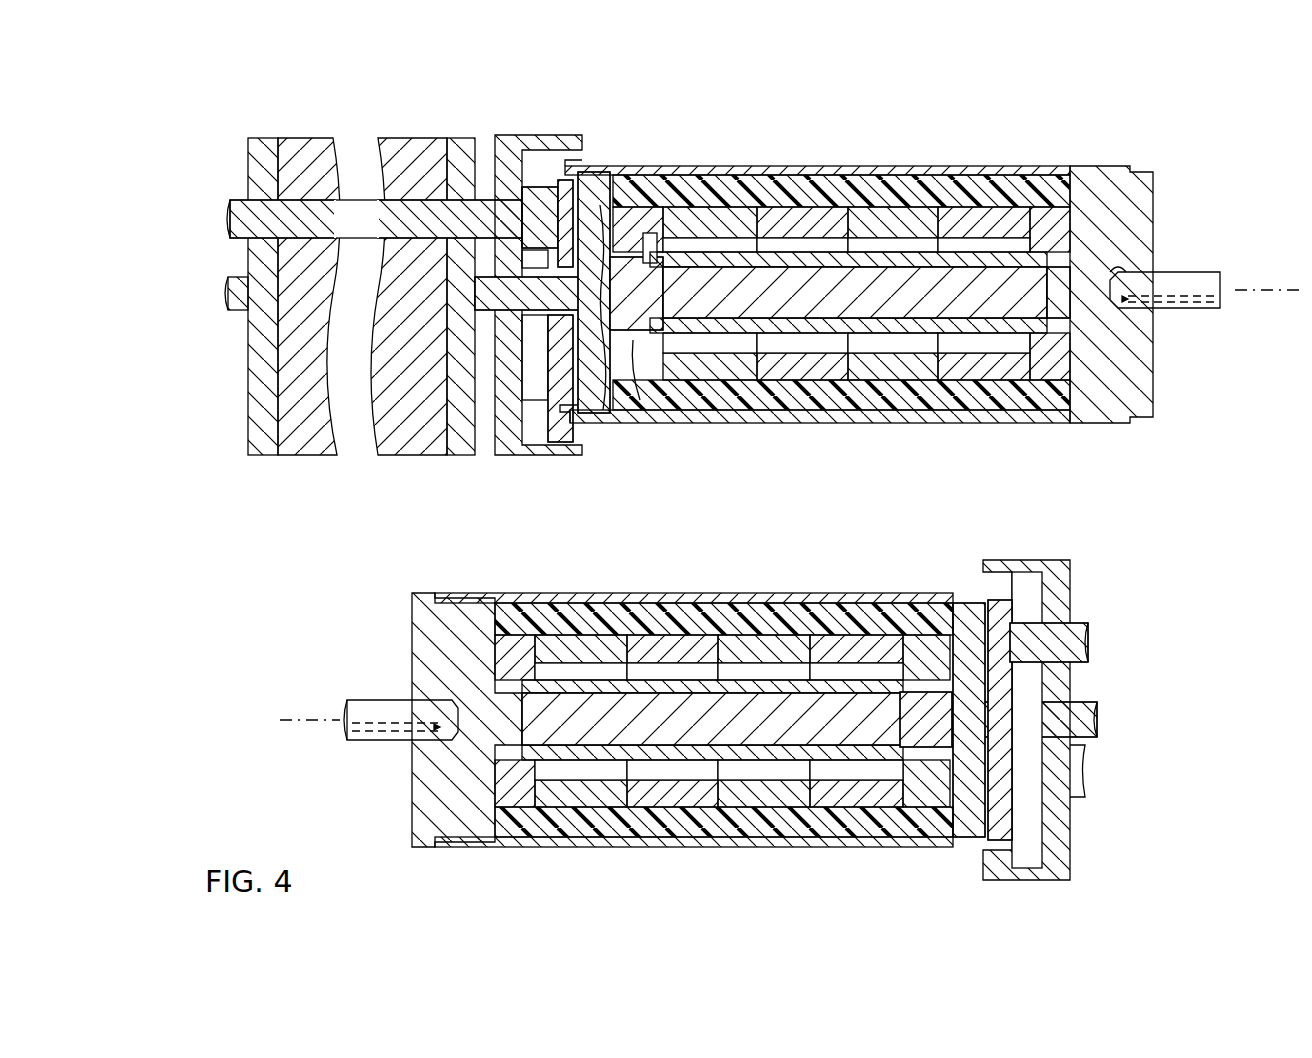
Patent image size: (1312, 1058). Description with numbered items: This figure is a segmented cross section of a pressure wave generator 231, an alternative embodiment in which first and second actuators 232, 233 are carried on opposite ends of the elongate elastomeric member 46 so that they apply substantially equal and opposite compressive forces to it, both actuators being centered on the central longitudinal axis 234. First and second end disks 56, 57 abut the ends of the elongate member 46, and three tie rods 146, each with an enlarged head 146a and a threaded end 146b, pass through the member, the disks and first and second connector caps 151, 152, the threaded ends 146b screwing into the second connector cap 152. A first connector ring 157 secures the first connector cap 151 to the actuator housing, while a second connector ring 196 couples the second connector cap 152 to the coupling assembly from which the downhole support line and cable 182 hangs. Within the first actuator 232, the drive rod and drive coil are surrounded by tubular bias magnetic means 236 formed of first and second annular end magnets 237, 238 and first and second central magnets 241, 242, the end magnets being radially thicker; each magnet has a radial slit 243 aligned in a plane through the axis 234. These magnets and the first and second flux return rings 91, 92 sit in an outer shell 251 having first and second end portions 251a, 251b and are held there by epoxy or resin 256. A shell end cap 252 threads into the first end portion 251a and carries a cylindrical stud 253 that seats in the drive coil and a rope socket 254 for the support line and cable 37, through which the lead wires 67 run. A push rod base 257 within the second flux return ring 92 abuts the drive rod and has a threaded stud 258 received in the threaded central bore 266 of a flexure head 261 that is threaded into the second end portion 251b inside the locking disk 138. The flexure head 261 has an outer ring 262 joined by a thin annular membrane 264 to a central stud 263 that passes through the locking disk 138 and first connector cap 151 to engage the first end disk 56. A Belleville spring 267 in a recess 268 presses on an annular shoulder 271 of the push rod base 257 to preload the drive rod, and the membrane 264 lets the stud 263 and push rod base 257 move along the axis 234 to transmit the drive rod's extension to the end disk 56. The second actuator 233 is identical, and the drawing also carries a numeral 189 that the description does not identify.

The support line and cable 37 is at (1195, 268).
The elongate member 46 is at (402, 132).
The first end disk 56 is at (462, 150).
The second end disk 57 is at (258, 150).
The wires 67 is at (1165, 305).
The first flux return ring 91 is at (1060, 215).
The second flux return ring 92 is at (690, 180).
The locking disk 138 is at (540, 400).
The tie rods 146 is at (378, 222).
The enlarged head 146a is at (540, 190).
The threaded end 146b is at (1090, 640).
The first connector cap 151 is at (506, 165).
The second connector cap 152 is at (1050, 590).
The first connector ring 157 is at (565, 130).
The downhole support line and cable 182 is at (355, 742).
The bracket flange 189 is at (1005, 872).
The second connector ring 196 is at (1050, 882).
The pressure wave generator 231 is at (1125, 147).
The first actuator 232 is at (870, 195).
The second actuator 233 is at (788, 625).
The central longitudinal axis 234 is at (1245, 290).
The tubular bias magnetic means 236 is at (935, 190).
The first end magnet 237 is at (1005, 215).
The second end magnet 238 is at (718, 215).
The first central magnet 241 is at (902, 212).
The second central magnet 242 is at (790, 215).
The slit 243 is at (1000, 365).
The outer shell 251 is at (746, 426).
The first end portion 251a is at (1050, 424).
The second end portion 251b is at (605, 422).
The shell end cap 252 is at (1148, 392).
The cylindrical stud 253 is at (1055, 270).
The rope socket 254 is at (1160, 270).
The epoxy or resin 256 is at (782, 395).
The push rod base 257 is at (634, 342).
The threaded stud 258 is at (582, 200).
The flexure head 261 is at (583, 422).
The outer ring 262 is at (614, 195).
The cylindrical stud 263 is at (485, 380).
The annular membrane 264 is at (612, 412).
The threaded central bore 266 is at (500, 420).
The Belleville spring 267 is at (640, 215).
The recess 268 is at (620, 405).
The annular shoulder 271 is at (606, 200).